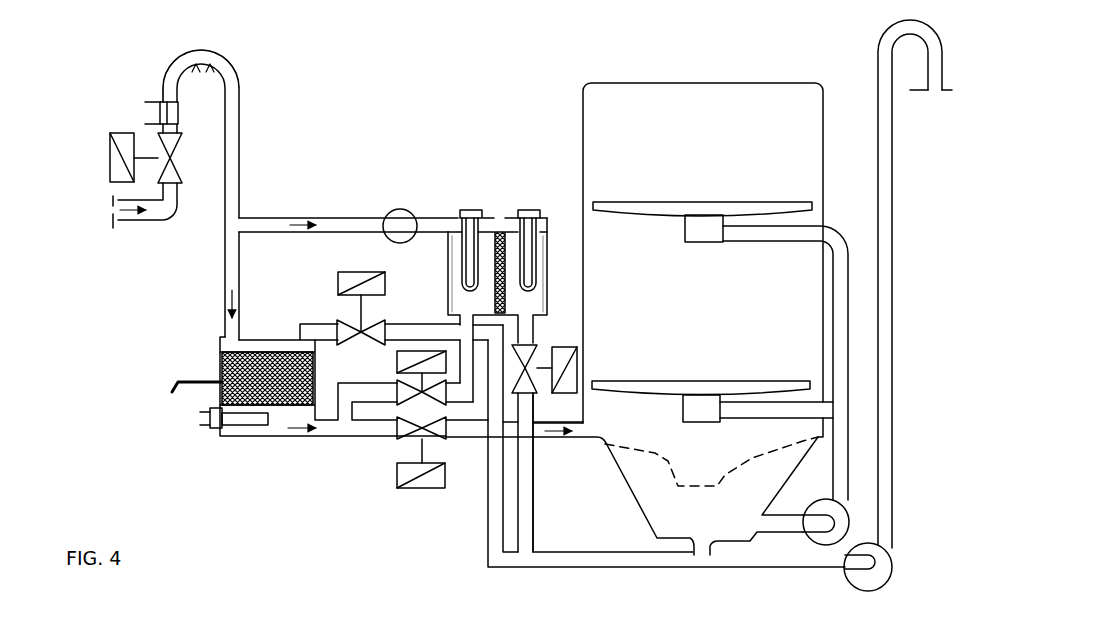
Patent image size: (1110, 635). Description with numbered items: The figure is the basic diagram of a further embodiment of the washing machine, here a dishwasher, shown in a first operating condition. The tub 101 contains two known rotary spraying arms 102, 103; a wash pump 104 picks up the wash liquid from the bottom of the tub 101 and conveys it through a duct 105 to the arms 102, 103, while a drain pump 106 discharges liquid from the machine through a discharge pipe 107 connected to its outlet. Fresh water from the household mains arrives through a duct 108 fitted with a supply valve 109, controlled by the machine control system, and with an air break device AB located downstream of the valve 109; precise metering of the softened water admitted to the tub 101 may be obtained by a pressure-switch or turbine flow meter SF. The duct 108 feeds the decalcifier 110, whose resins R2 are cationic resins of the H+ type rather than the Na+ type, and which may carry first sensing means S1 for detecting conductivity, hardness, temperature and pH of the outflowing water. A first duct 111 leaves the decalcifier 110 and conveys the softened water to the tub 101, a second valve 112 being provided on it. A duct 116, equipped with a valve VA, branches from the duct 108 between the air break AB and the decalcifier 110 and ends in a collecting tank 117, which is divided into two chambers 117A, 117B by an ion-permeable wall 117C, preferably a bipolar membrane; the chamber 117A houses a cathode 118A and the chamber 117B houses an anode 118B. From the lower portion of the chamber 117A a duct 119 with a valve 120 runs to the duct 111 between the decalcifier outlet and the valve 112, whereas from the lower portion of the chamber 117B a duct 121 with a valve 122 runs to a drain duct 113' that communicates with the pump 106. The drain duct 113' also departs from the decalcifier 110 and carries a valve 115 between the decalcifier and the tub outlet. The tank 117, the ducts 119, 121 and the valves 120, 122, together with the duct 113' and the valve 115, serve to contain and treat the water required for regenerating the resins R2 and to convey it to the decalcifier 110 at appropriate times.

The tub 101 is at (730, 108).
The rotary spraying arm 102 is at (663, 202).
The rotary spraying arm 103 is at (663, 383).
The wash pump 104 is at (840, 520).
The duct 105 is at (855, 300).
The drain pump 106 is at (880, 563).
The discharge pipe 107 is at (880, 72).
The duct 108 is at (235, 130).
The supply valve 109 is at (120, 135).
The decalcifier 110 is at (204, 355).
The first duct 111 is at (352, 438).
The second valve 112 is at (397, 486).
The drain duct 113' is at (547, 441).
The valve 115 is at (338, 285).
The duct 116 is at (350, 217).
The collecting tank 117 is at (438, 198).
The chamber 117A is at (448, 302).
The chamber 117B is at (555, 300).
The wall 117C is at (518, 218).
The cathode 118A is at (466, 210).
The anode 118B is at (532, 212).
The duct 119 is at (465, 440).
The valve 120 is at (397, 362).
The duct 121 is at (527, 518).
The valve 122 is at (622, 350).
The air break device AB is at (200, 50).
The turbine flow meter SF is at (158, 103).
The valve VA is at (395, 210).
The resins R2 is at (186, 395).
The first sensing means S1 is at (228, 436).